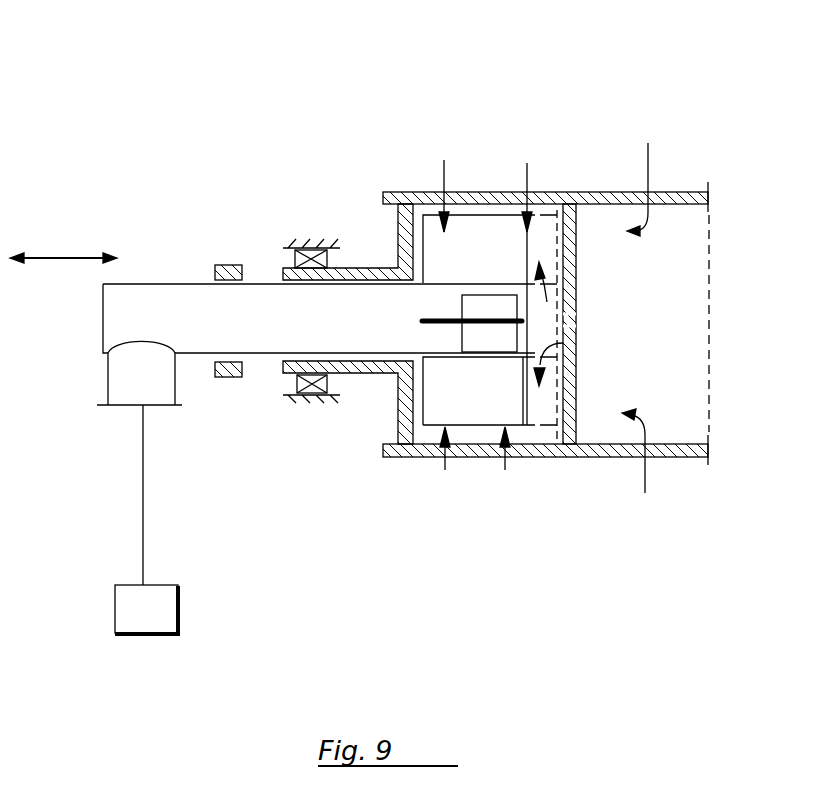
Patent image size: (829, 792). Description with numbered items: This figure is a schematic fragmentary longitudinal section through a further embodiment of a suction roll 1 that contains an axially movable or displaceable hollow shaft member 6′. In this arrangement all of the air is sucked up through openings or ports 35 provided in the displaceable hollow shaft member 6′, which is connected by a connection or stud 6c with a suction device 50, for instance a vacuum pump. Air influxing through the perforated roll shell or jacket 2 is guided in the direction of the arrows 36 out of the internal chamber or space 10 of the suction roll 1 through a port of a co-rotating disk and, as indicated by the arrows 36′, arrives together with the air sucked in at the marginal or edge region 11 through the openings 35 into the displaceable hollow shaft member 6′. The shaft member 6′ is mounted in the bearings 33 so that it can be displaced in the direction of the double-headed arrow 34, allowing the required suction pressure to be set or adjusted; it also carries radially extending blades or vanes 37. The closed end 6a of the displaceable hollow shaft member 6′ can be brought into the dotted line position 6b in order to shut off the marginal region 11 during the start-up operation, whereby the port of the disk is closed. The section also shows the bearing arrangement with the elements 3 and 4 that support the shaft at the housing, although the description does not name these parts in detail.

The suction roll 1 is at (697, 120).
The perforated roll shell 2 is at (481, 192).
The lower bearing 3 is at (370, 370).
The upper bearing 4 is at (307, 247).
The displaceable hollow shaft member 6′ is at (187, 300).
The closed end 6a is at (628, 420).
The dotted line position 6b is at (573, 317).
The connection stud 6c is at (125, 382).
The internal chamber 10 is at (678, 218).
The marginal region 11 is at (512, 210).
The bearings 33 is at (232, 268).
The double-headed arrow 34 is at (63, 241).
The openings 35 is at (470, 300).
The arrows 36 is at (498, 297).
The arrows 36′ is at (580, 347).
The radially extending blades 37 is at (465, 392).
The suction device 50 is at (130, 608).